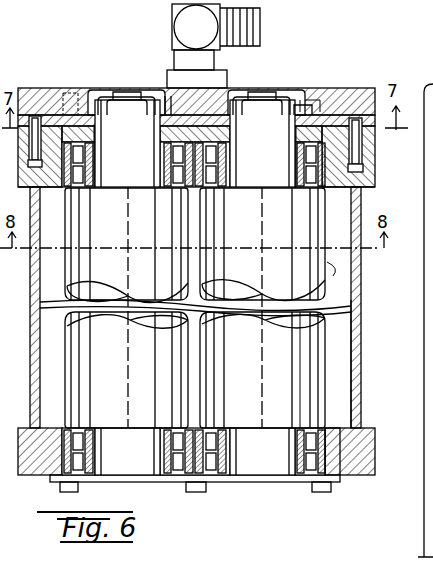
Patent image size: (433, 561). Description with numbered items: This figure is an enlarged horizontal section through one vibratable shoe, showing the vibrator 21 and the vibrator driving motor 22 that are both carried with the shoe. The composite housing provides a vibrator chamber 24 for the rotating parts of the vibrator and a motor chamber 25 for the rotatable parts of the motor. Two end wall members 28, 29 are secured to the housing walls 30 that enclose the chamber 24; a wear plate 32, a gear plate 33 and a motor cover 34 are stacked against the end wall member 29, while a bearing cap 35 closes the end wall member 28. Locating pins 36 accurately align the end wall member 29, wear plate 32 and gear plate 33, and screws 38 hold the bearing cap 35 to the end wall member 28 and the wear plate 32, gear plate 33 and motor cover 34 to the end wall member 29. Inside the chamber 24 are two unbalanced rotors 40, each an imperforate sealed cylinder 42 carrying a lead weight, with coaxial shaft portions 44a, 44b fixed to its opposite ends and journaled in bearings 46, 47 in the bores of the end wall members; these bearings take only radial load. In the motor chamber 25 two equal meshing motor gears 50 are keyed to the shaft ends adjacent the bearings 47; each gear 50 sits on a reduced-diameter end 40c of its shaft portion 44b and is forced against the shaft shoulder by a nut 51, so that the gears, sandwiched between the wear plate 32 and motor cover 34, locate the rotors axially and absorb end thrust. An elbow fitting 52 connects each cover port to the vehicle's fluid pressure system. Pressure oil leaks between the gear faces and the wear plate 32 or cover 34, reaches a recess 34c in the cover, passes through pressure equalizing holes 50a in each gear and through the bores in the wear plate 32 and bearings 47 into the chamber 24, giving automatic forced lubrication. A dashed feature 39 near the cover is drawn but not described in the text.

The vibrator 21 is at (336, 279).
The vibrator driving motor 22 is at (333, 118).
The vibrator housing chamber 24 is at (361, 350).
The motor housing chamber 25 is at (170, 114).
The end wall member 28 is at (375, 465).
The end wall member 29 is at (376, 177).
The housing walls 30 is at (362, 376).
The wear plate 32 is at (365, 138).
The gear plate 33 is at (25, 112).
The motor cover 34 is at (80, 90).
The recess 34c is at (288, 96).
The bearing cap 35 is at (278, 483).
The locating pins 36 is at (30, 172).
The screws 38 is at (321, 493).
The hidden passage 39 is at (70, 100).
The rotor 40 is at (195, 308).
The rotor shoulder 40c is at (262, 130).
The sealed cylinder 42 is at (281, 370).
The shaft portion 44a is at (195, 451).
The shaft portion 44b is at (195, 143).
The bearing 46 is at (333, 430).
The bearing 47 is at (313, 172).
The motor gear 50 is at (82, 118).
The pressure equalizing holes 50a is at (304, 118).
The nut 51 is at (122, 105).
The elbow fitting 52 is at (185, 27).